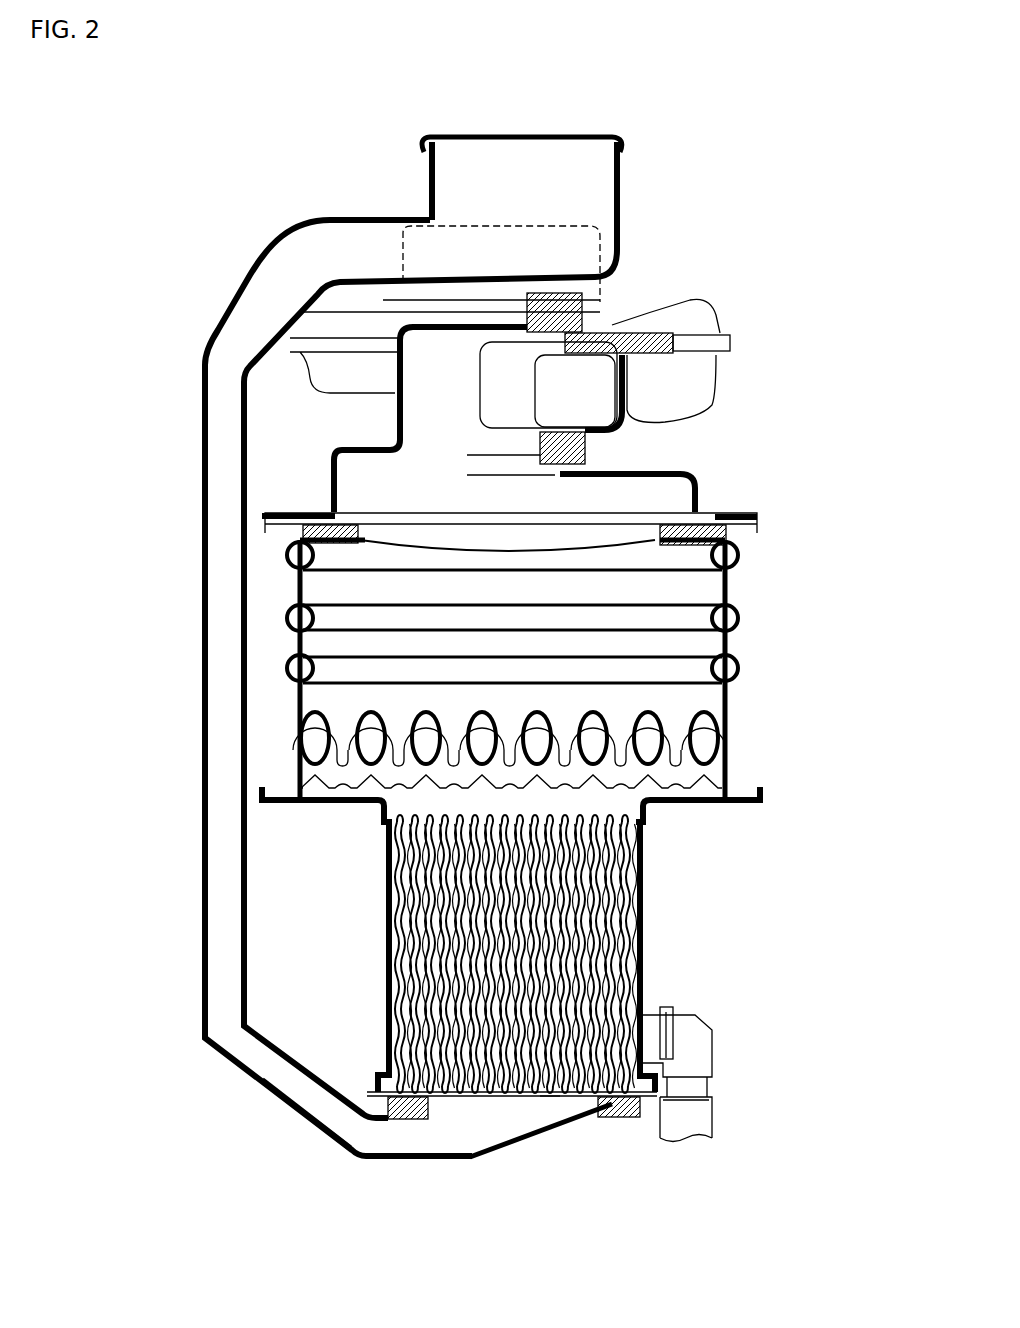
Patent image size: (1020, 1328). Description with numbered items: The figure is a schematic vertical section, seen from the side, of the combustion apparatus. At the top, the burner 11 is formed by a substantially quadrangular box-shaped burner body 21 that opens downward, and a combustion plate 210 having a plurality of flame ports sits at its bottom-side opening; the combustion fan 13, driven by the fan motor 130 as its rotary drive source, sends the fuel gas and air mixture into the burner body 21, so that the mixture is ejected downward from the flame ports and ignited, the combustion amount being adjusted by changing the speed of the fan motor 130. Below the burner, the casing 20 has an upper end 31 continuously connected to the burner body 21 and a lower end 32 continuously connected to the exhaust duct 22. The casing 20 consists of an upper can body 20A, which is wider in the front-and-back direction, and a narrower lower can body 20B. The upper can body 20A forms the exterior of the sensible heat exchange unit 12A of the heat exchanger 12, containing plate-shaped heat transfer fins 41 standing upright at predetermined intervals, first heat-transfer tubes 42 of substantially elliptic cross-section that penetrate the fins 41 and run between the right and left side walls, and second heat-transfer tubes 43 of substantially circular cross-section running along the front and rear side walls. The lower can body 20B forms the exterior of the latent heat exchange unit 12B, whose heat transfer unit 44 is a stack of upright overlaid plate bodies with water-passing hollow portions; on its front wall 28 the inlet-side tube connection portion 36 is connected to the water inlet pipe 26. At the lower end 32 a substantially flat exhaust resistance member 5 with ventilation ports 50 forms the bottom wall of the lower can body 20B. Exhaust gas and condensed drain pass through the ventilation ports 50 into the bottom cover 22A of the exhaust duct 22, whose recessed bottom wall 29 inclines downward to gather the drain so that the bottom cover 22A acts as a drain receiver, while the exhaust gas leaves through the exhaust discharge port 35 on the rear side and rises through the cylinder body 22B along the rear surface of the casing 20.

The exhaust resistance member 5 is at (585, 1098).
The burner 11 is at (707, 480).
The heat exchanger 12 is at (747, 939).
The sensible heat exchange unit 12A is at (703, 815).
The latent heat exchange unit 12B is at (672, 884).
The combustion fan 13 is at (657, 277).
The fan motor 130 is at (555, 228).
The casing 20 is at (239, 816).
The upper can body 20A is at (298, 766).
The lower can body 20B is at (385, 920).
The burner body 21 is at (640, 470).
The exhaust duct 22 is at (257, 1113).
The bottom cover 22A is at (437, 1147).
The cylinder body 22B is at (205, 992).
The water inlet pipe 26 is at (700, 1118).
The front wall 28 is at (640, 960).
The bottom wall 29 is at (528, 1148).
The upper end 31 is at (320, 533).
The lower end 32 is at (383, 1122).
The exhaust discharge port 35 is at (472, 1160).
The inlet-side tube connection portion 36 is at (652, 1015).
The heat transfer fins 41 is at (722, 770).
The first heat-transfer tubes 42 is at (300, 722).
The second heat-transfer tubes 43 is at (738, 560).
The heat transfer unit 44 is at (395, 985).
The ventilation ports 50 is at (548, 1102).
The combustion plate 210 is at (623, 547).